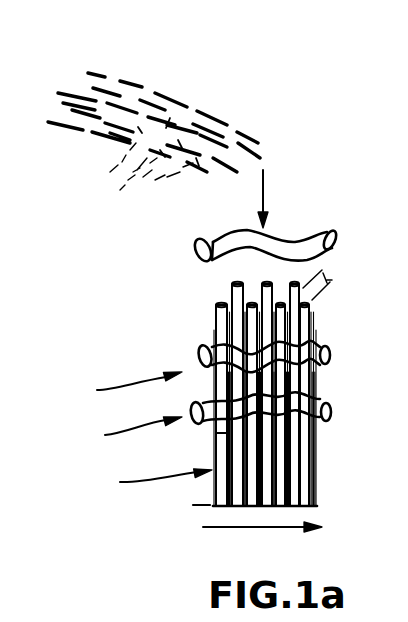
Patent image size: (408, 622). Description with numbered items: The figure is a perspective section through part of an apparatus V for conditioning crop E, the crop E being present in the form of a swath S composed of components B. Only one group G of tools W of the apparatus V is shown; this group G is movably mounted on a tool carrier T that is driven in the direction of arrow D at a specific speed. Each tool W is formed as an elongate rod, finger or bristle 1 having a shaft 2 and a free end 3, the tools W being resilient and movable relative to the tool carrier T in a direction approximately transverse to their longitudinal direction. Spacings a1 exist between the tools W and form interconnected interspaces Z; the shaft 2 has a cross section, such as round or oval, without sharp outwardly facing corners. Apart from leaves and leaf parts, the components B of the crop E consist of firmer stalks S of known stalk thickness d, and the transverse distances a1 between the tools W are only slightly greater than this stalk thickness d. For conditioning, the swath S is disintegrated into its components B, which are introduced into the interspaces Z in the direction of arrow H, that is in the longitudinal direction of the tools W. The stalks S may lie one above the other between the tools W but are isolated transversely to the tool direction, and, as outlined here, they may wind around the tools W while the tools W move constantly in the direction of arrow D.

The swath / stalk S is at (120, 80).
The crop E is at (183, 100).
The components B is at (330, 193).
The arrow (direction of introduction) H is at (271, 199).
The stalk thickness d is at (216, 235).
The free end 3 is at (213, 303).
The interspaces Z is at (250, 285).
The spacing / transverse distance a1 is at (330, 281).
The apparatus V is at (129, 388).
The group of tools G is at (129, 434).
The bristle 1 is at (216, 433).
The tools W is at (146, 484).
The shaft 2 is at (217, 488).
The tool carrier T is at (319, 505).
The arrow (direction of drive) D is at (236, 528).